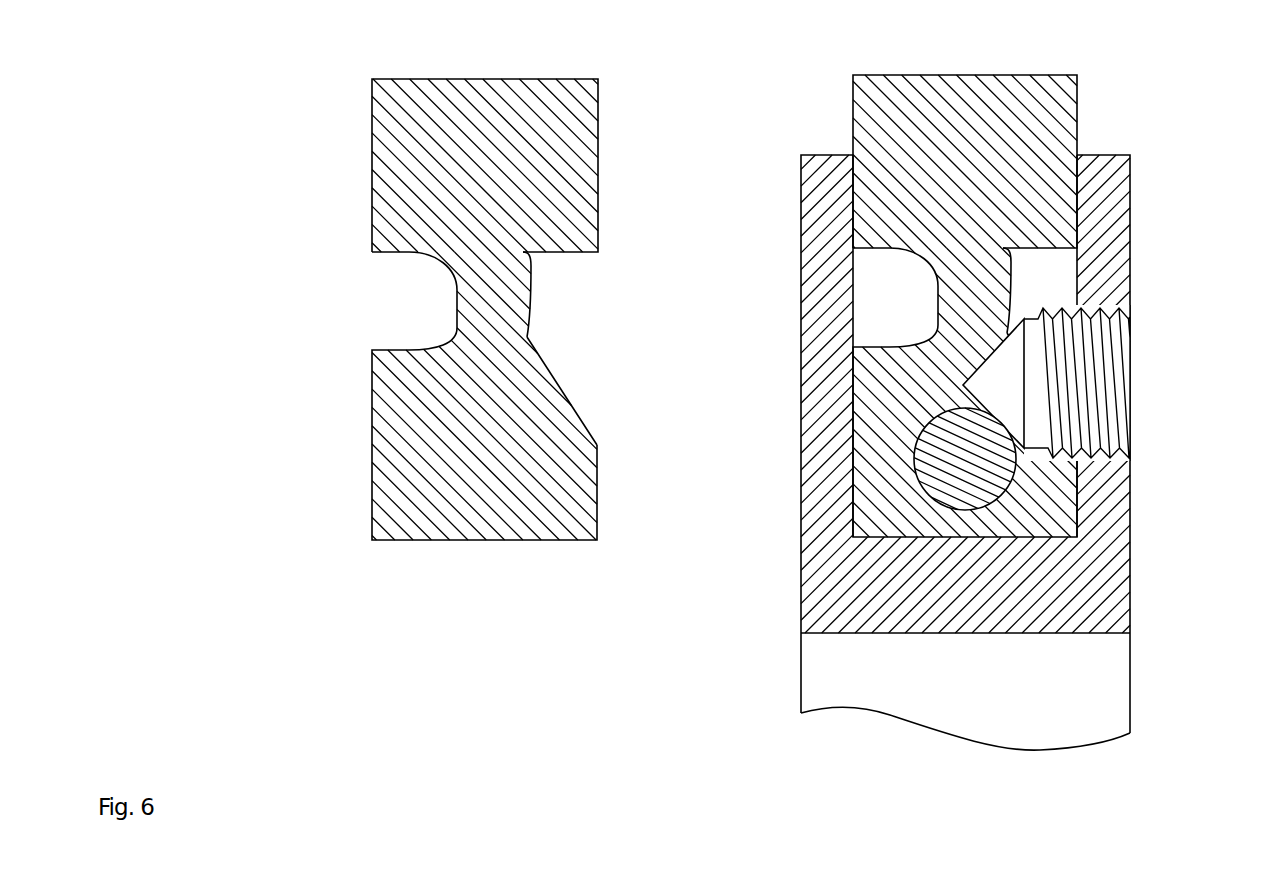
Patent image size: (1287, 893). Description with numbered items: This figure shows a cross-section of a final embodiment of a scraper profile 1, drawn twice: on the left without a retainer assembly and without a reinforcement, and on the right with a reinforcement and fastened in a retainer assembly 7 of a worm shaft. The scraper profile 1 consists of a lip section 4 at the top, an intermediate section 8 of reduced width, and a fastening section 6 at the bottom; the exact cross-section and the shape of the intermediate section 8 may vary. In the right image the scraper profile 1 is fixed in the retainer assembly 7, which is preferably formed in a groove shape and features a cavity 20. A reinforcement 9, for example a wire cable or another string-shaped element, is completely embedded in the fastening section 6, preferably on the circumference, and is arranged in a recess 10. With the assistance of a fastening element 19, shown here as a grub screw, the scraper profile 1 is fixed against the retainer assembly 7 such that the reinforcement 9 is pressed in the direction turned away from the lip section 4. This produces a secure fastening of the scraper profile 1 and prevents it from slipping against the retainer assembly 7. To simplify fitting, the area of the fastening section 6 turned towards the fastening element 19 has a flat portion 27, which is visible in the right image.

The scraper profile 1 is at (1150, 81).
The lip section 4 is at (880, 123).
The fastening section 6 is at (868, 498).
The retainer assembly 7 is at (1105, 596).
The intermediate section 8 is at (987, 285).
The reinforcement 9 is at (947, 453).
The recess 10 is at (1013, 478).
The fastening element 19 is at (1118, 357).
The cavity 20 is at (872, 290).
The flat portion 27 is at (553, 382).